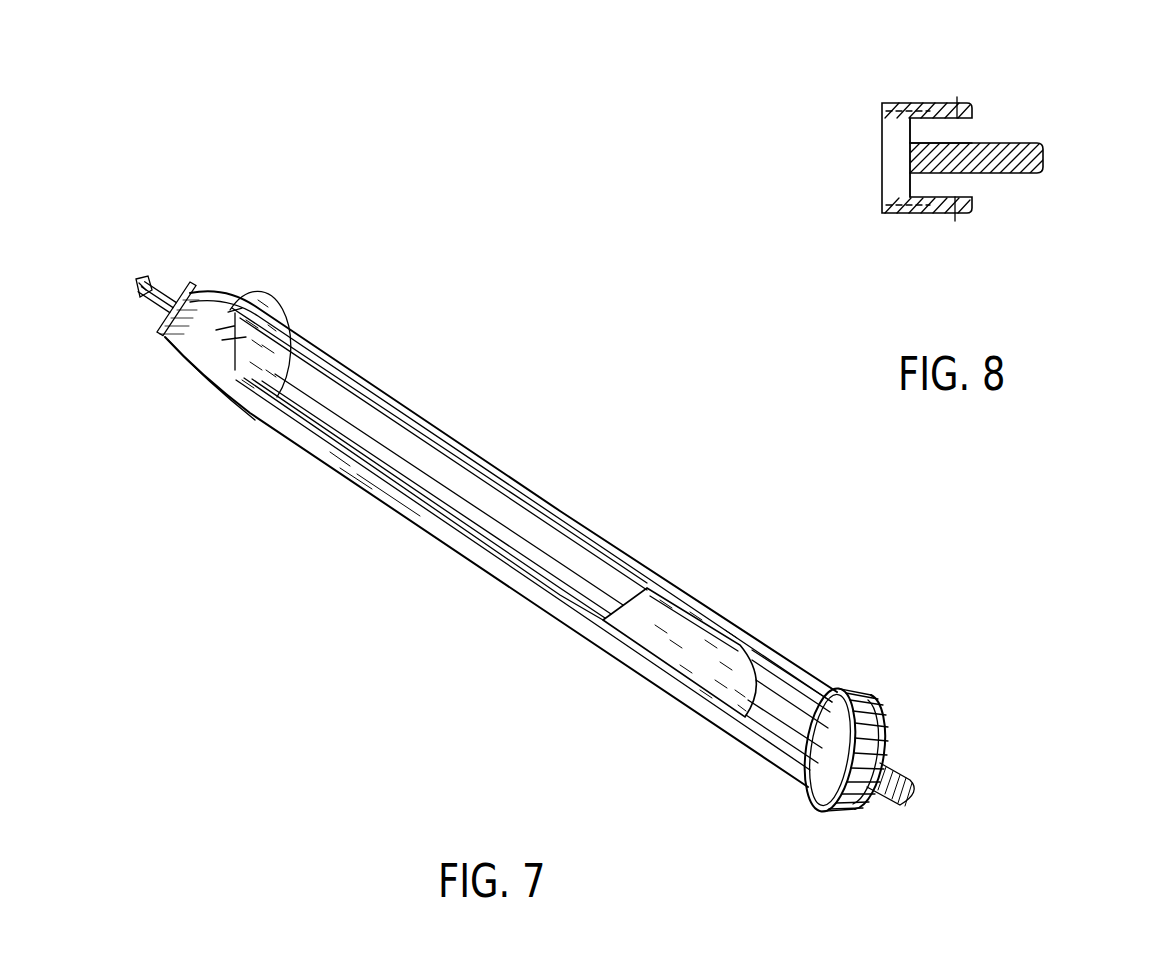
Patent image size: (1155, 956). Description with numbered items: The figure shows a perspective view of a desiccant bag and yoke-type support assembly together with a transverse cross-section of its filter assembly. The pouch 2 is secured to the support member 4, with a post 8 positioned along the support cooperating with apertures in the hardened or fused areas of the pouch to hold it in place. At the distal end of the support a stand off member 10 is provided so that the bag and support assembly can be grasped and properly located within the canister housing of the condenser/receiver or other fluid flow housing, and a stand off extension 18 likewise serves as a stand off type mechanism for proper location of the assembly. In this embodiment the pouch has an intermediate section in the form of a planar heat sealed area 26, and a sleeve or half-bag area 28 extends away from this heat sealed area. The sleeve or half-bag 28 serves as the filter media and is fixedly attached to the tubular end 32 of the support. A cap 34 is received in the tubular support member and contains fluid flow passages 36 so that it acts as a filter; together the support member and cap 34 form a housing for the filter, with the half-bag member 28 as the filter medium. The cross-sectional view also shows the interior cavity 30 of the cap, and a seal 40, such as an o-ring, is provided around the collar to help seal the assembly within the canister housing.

In FIG. 7, the pouch 2 is at (355, 405).
In FIG. 7, the support member 4 is at (482, 557).
In FIG. 7, the post 8 is at (227, 340).
In FIG. 7, the stand off member 10 is at (145, 280).
In FIG. 7, the stand off extension 18 is at (912, 808).
In FIG. 8, the stand off extension 18 is at (1045, 165).
In FIG. 7, the planar heat sealed area 26 is at (643, 628).
In FIG. 7, the sleeve or half-bag area 28 is at (773, 687).
In FIG. 8, the cap cavity 30 is at (898, 197).
In FIG. 7, the tubular end 32 is at (848, 760).
In FIG. 8, the tubular end 32 is at (892, 102).
In FIG. 7, the cap 34 is at (885, 743).
In FIG. 8, the cap 34 is at (973, 110).
In FIG. 8, the fluid flow passages 36 is at (963, 133).
In FIG. 7, the seal 40 is at (870, 705).
In FIG. 8, the seal 40 is at (955, 218).